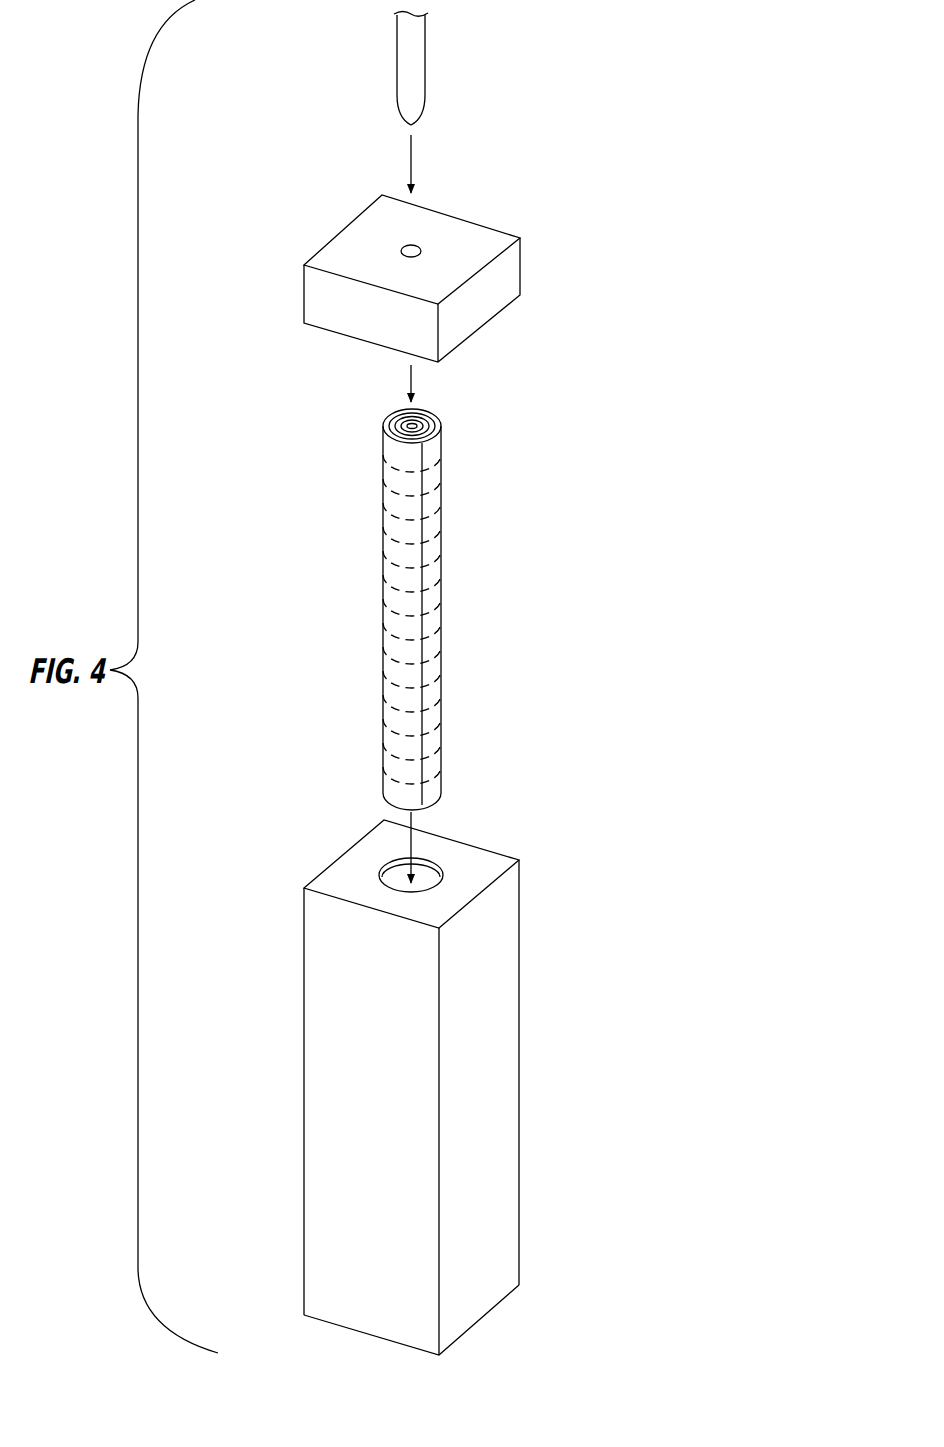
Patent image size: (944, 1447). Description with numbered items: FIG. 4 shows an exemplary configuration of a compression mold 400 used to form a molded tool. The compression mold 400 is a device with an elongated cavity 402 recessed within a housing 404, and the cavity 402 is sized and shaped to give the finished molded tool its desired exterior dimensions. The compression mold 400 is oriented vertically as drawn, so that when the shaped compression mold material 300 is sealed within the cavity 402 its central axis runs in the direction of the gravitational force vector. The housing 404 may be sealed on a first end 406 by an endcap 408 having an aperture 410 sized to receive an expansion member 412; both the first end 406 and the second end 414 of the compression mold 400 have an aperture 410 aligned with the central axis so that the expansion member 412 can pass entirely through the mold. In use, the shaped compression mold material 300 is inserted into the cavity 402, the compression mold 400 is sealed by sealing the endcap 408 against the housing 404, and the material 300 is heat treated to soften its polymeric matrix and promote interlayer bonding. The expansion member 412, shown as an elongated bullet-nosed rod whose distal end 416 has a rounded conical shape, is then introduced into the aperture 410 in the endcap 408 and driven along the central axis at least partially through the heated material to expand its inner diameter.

The shaped compression mold material 300 is at (470, 518).
The compression mold 400 is at (378, 1091).
The elongated cavity 402 is at (438, 858).
The housing 404 is at (500, 1043).
The first end 406 is at (445, 256).
The endcap 408 is at (510, 272).
The aperture 410 is at (410, 245).
The expansion member 412 is at (411, 92).
The second end 414 is at (498, 1318).
The distal end 416 is at (404, 130).